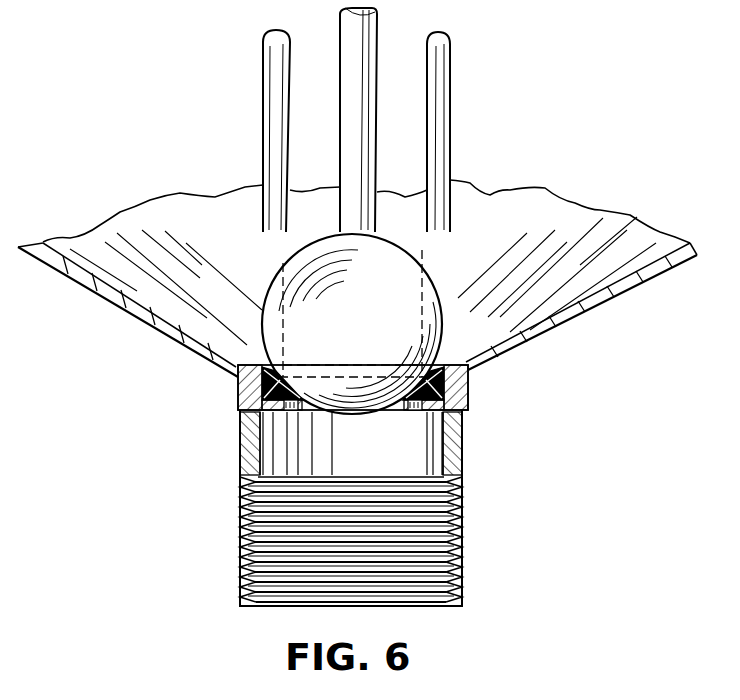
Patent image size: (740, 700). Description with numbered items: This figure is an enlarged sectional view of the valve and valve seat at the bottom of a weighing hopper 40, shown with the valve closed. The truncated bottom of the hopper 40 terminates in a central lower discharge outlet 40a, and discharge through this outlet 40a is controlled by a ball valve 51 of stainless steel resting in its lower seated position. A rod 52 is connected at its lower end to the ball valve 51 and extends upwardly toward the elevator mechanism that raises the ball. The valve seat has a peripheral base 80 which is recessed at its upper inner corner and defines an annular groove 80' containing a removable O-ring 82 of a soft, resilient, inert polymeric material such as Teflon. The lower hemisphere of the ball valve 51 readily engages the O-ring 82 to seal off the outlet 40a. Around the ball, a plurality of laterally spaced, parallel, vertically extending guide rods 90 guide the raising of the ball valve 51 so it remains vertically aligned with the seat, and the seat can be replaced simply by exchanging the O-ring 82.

The hopper 40 is at (617, 300).
The outlet 40a is at (462, 470).
The ball valve 51 is at (405, 265).
The rod 52 is at (367, 78).
The peripheral base 80 is at (375, 387).
The annular groove 80' is at (376, 364).
The O-ring 82 is at (463, 417).
The guide rods 90 is at (272, 165).